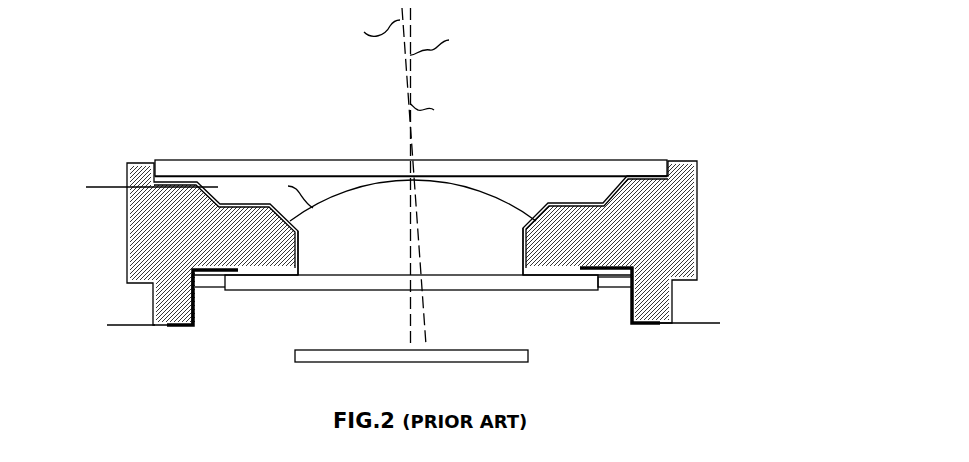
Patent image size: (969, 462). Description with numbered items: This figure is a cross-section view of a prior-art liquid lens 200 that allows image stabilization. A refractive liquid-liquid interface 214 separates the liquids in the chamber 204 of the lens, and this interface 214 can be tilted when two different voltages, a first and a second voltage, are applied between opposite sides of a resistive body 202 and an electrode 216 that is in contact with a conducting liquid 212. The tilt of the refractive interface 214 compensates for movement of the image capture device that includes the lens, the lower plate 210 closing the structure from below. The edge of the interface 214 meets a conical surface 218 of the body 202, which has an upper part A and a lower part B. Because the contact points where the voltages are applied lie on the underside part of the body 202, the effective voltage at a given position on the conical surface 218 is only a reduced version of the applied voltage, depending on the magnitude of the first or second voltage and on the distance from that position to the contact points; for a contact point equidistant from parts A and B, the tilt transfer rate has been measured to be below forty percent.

The variable focus lens device (prior art) 200 is at (410, 185).
The resistive body 202 is at (557, 266).
The cavity / liquid chamber 204 is at (522, 256).
The bottom plate 210 is at (443, 266).
The conducting liquid 212 is at (573, 188).
The refractive liquid-liquid interface 214 is at (358, 190).
The electrode 216 is at (218, 186).
The conical surface 218 is at (313, 178).